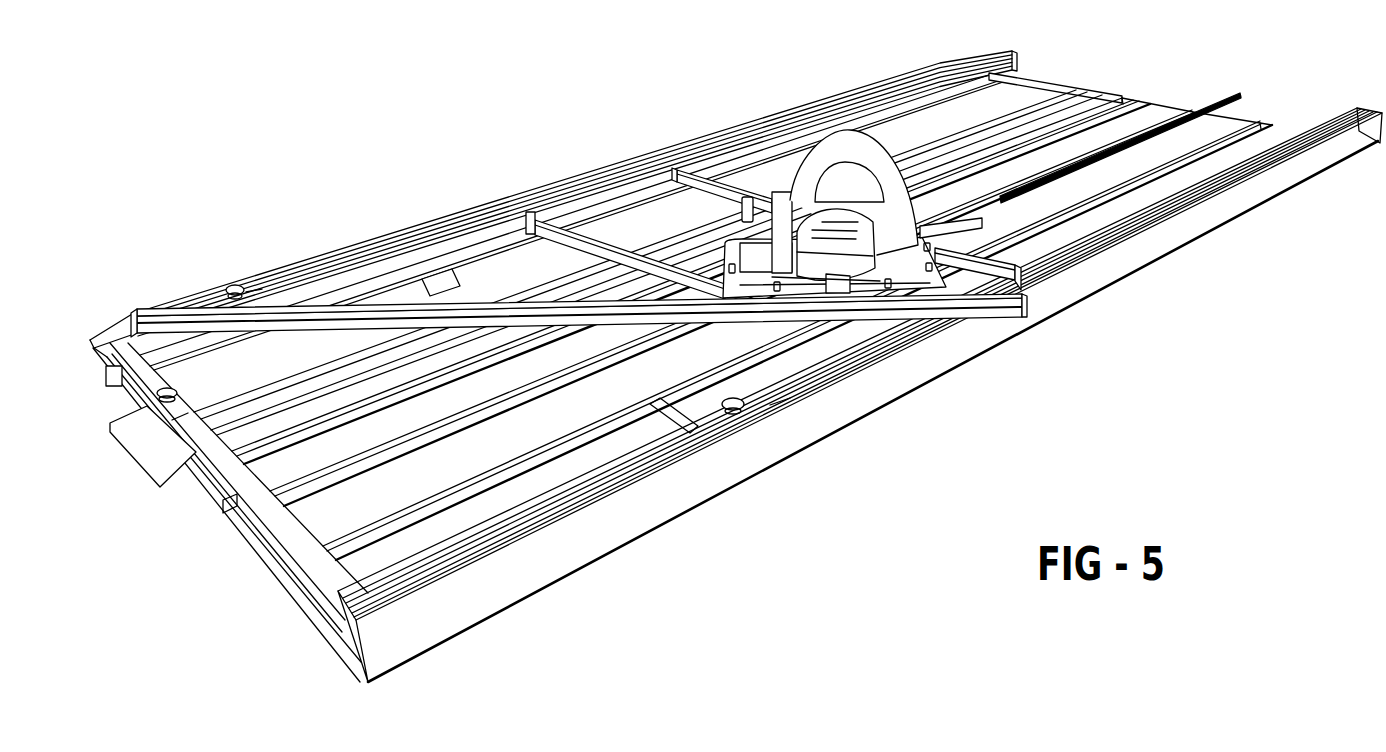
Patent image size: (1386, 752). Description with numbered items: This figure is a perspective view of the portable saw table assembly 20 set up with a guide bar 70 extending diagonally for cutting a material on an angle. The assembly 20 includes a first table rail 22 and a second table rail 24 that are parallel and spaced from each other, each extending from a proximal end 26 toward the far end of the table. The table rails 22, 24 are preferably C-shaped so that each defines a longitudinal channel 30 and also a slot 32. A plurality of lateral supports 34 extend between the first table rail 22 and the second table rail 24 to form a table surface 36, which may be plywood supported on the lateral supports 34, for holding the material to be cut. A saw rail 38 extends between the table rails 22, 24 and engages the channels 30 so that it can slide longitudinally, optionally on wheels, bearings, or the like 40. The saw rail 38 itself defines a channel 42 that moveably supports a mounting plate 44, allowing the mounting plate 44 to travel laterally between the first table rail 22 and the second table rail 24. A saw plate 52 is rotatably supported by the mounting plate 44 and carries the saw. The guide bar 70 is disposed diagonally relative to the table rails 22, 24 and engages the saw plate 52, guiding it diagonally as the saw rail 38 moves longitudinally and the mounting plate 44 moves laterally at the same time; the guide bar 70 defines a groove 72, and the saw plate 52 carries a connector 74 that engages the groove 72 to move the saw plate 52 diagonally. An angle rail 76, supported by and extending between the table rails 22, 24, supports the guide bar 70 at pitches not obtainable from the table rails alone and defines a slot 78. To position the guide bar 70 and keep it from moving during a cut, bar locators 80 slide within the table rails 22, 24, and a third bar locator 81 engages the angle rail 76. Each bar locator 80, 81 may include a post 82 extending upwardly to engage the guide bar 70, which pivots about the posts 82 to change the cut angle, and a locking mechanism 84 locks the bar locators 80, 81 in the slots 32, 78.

The saw table assembly 20 is at (652, 496).
The first table rail 22 is at (443, 220).
The second table rail 24 is at (890, 387).
The proximal end 26 is at (327, 623).
The channel 30 is at (490, 232).
The slot 32 is at (470, 548).
The lateral support 34 is at (445, 280).
The table surface 36 is at (458, 462).
The saw rail 38 is at (570, 228).
The wheels, bearings, or the like 40 is at (514, 231).
The channel 42 is at (724, 190).
The mounting plate 44 is at (956, 238).
The saw plate 52 is at (928, 285).
The guide bar 70 is at (336, 318).
The groove 72 is at (1024, 294).
The connector 74 is at (838, 292).
The angle rail 76 is at (290, 522).
The slot 78 is at (320, 585).
The bar locator 80 is at (254, 290).
The third bar locator 81 is at (174, 424).
The post 82 is at (120, 386).
The locking mechanism 84 is at (232, 285).